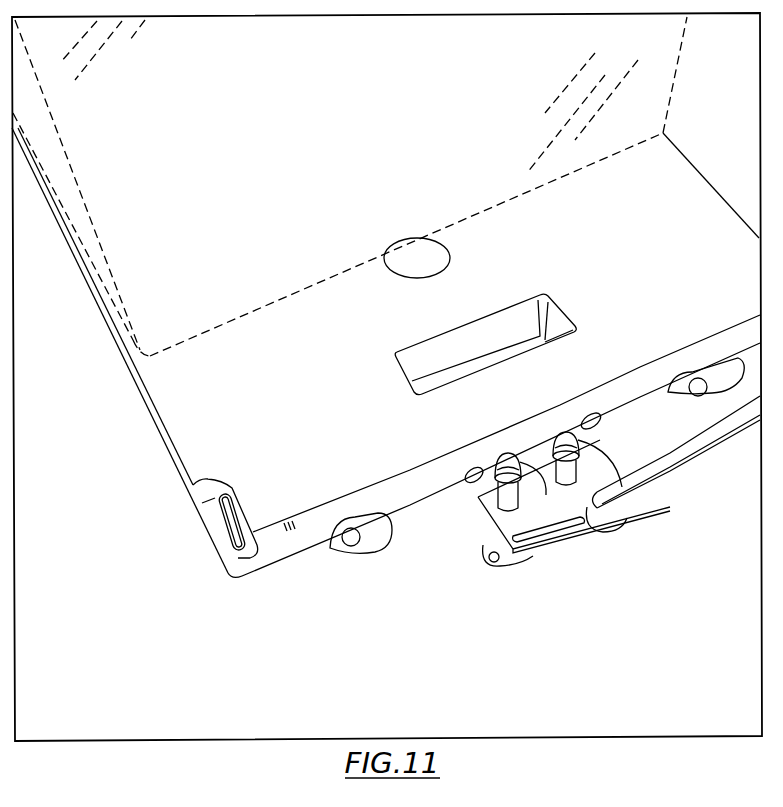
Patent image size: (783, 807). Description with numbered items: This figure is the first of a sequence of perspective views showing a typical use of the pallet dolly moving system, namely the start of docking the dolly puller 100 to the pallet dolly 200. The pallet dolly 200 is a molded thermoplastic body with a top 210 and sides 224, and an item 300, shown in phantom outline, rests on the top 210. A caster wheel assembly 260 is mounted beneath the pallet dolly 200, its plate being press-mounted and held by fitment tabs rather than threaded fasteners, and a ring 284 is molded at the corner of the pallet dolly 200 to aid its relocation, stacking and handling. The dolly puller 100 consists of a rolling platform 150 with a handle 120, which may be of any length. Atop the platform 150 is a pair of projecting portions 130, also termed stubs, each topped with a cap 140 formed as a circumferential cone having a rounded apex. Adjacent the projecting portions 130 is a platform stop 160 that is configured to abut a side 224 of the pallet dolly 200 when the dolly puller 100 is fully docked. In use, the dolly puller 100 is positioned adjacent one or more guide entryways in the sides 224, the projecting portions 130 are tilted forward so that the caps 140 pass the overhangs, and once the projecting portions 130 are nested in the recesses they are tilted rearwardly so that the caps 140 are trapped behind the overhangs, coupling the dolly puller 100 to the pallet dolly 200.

The dolly puller 100 is at (596, 532).
The handle 120 is at (700, 440).
The projecting portions 130 is at (499, 508).
The caps 140 is at (474, 480).
The rolling platform 150 is at (486, 540).
The platform stop 160 is at (632, 492).
The pallet dolly 200 is at (386, 366).
The top 210 is at (306, 374).
The sides 224 is at (123, 360).
The caster wheel assemblies 260 is at (350, 552).
The rings 284 is at (235, 528).
The housing 300 is at (338, 207).